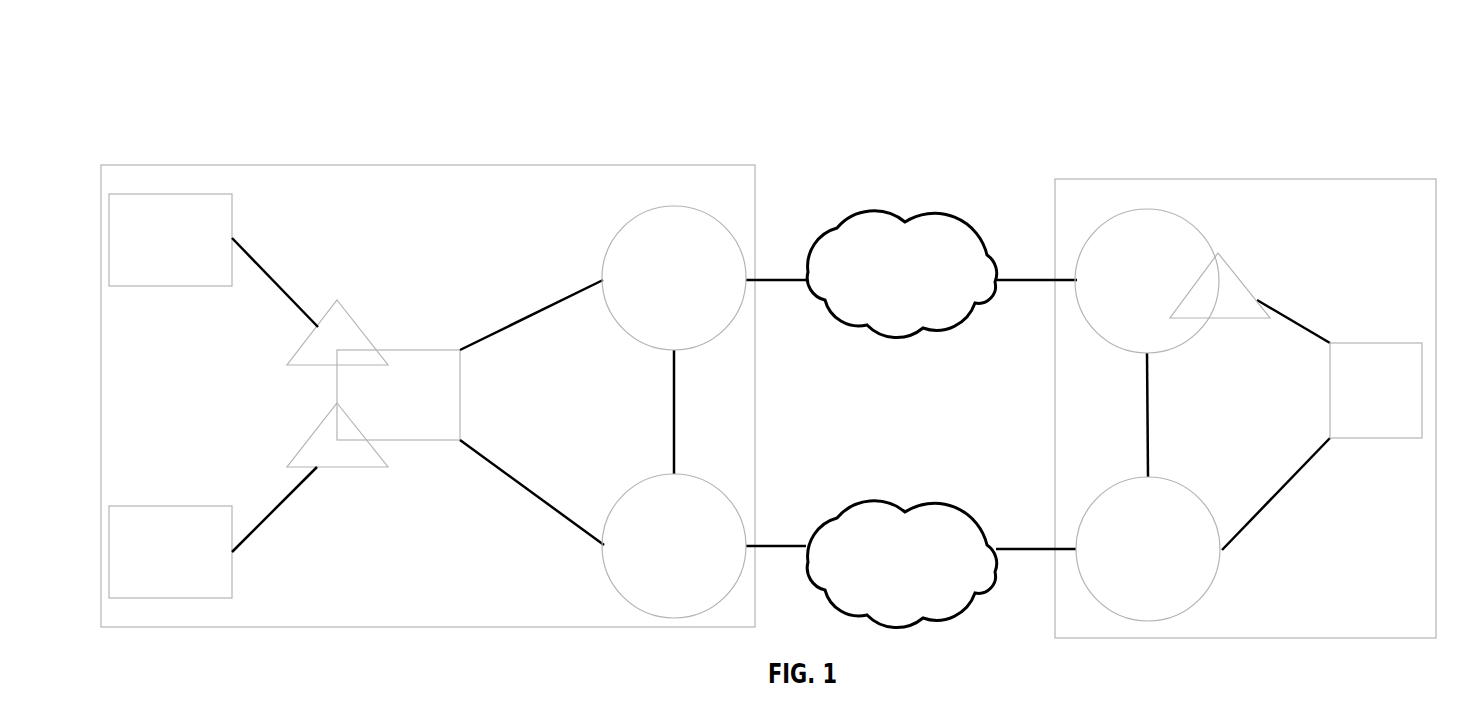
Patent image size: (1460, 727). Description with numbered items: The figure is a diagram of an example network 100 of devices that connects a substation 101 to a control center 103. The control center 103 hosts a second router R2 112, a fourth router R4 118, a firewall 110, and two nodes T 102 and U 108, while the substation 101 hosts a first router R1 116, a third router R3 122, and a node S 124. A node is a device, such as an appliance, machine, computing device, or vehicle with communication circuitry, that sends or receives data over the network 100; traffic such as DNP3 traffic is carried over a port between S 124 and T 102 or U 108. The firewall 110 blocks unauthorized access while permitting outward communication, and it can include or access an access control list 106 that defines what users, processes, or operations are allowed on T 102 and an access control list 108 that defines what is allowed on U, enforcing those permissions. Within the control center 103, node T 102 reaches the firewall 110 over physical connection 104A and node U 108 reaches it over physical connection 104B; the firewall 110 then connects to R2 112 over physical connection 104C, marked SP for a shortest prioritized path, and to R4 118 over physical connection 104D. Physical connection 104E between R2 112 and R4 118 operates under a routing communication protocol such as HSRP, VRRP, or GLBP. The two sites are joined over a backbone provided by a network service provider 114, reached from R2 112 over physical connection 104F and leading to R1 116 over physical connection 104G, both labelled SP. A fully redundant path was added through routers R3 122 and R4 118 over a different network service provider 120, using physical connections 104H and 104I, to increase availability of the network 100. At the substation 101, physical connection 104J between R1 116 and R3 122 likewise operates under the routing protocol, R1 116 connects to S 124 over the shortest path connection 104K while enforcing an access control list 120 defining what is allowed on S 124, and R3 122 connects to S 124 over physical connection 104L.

The network 100 is at (1242, 72).
The substation 101 is at (1292, 184).
The node T 102 is at (226, 201).
The control center 103 is at (338, 169).
The physical connection 104A is at (274, 283).
The physical connection 104B is at (283, 502).
The physical connection 104C is at (554, 305).
The physical connection 104D is at (517, 481).
The physical connection 104E is at (674, 420).
The physical connection 104F is at (767, 283).
The physical connection 104G is at (1009, 284).
The physical connection 104H is at (776, 535).
The physical connection 104I is at (1008, 548).
The physical connection 104J is at (1149, 429).
The physical connection 104K is at (1315, 334).
The physical connection 104L is at (1298, 471).
The access control list 106 is at (350, 327).
The node U / access control list 108 is at (227, 521).
The firewall 110 is at (427, 357).
The second router 112 is at (714, 228).
The network service provider 114 is at (932, 222).
The first router 116 is at (1187, 235).
The fourth router 118 is at (715, 503).
The network service provider / access control list 120 is at (932, 513).
The third router 122 is at (1172, 491).
The node S 124 is at (1383, 349).